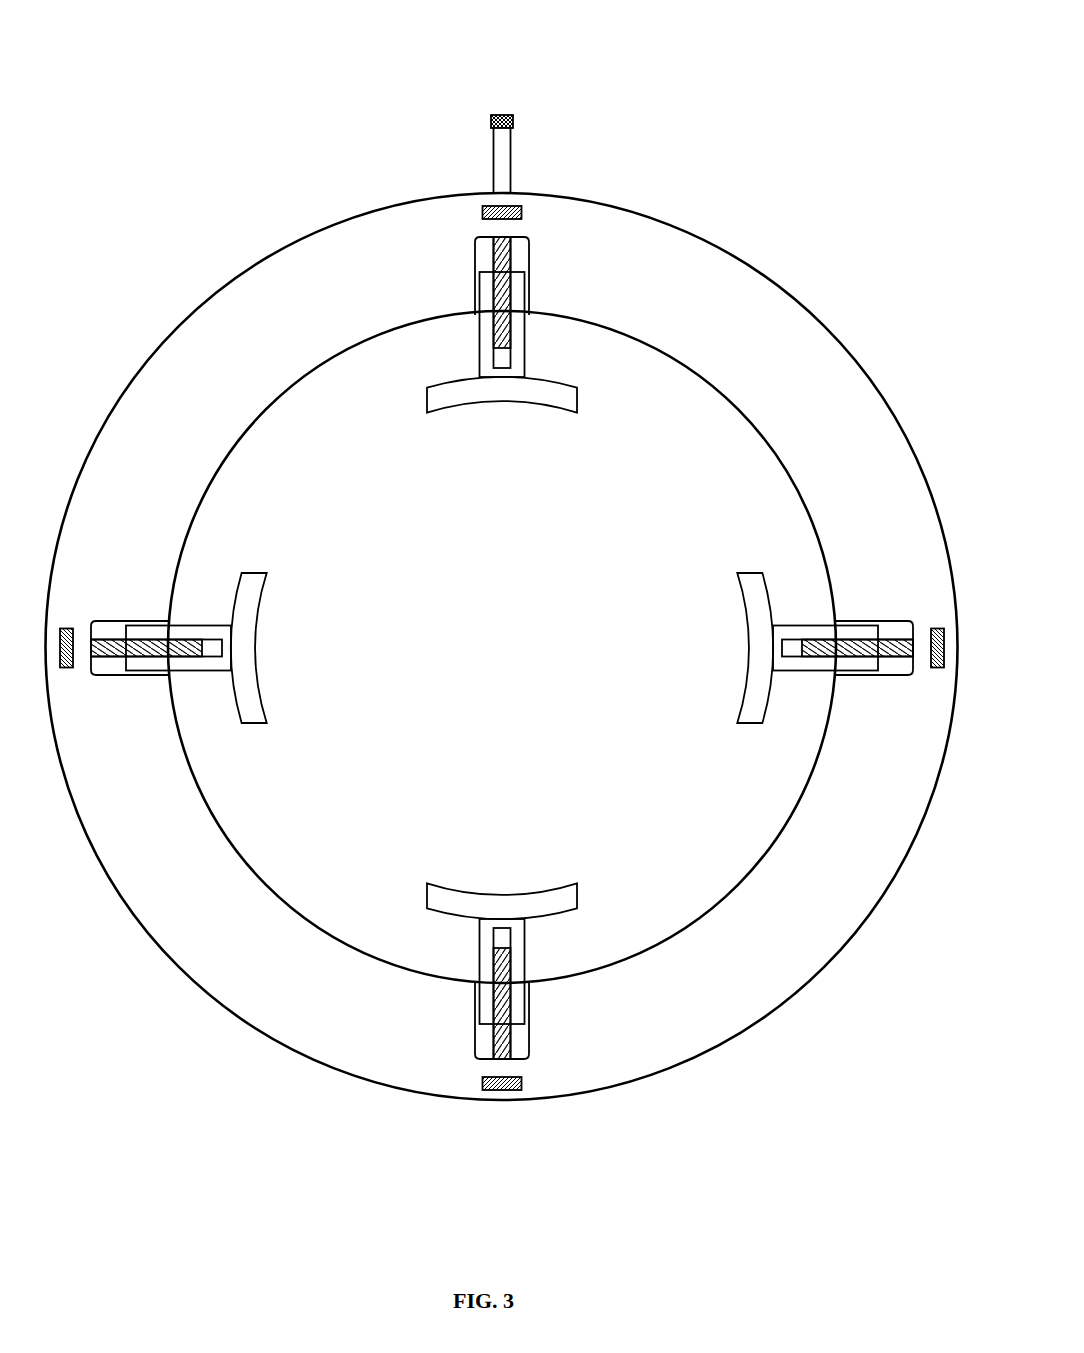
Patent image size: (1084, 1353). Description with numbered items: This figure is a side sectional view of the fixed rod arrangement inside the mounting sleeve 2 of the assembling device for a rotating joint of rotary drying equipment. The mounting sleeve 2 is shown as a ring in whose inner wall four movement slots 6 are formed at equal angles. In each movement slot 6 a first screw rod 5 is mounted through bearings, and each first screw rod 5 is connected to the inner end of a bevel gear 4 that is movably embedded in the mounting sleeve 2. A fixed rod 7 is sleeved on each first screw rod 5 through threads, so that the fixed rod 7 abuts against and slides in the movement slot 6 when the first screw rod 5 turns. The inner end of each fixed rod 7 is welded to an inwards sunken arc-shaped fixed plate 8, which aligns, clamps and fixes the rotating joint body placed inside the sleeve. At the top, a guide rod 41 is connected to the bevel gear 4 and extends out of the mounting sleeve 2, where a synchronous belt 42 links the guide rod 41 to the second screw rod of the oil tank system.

The mounting sleeve 2 is at (238, 360).
The bevel gear 4 is at (522, 212).
The guide rod 41 is at (503, 180).
The synchronous belt 42 is at (503, 118).
The first screw rod 5 is at (508, 307).
The movement slot 6 is at (483, 255).
The fixed rod 7 is at (488, 313).
The fixed plate 8 is at (496, 387).